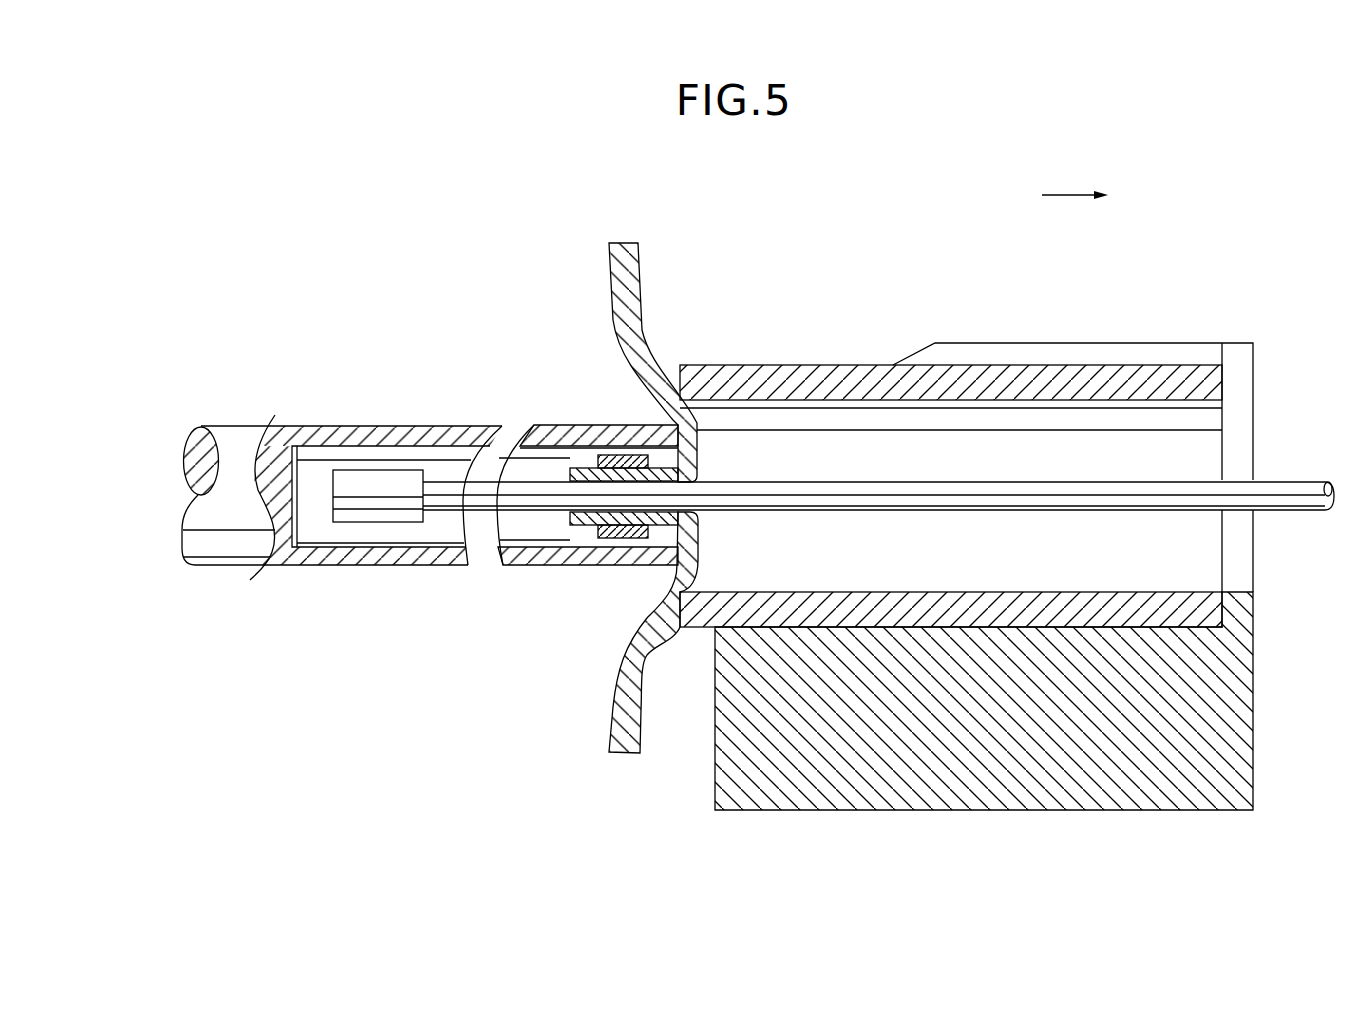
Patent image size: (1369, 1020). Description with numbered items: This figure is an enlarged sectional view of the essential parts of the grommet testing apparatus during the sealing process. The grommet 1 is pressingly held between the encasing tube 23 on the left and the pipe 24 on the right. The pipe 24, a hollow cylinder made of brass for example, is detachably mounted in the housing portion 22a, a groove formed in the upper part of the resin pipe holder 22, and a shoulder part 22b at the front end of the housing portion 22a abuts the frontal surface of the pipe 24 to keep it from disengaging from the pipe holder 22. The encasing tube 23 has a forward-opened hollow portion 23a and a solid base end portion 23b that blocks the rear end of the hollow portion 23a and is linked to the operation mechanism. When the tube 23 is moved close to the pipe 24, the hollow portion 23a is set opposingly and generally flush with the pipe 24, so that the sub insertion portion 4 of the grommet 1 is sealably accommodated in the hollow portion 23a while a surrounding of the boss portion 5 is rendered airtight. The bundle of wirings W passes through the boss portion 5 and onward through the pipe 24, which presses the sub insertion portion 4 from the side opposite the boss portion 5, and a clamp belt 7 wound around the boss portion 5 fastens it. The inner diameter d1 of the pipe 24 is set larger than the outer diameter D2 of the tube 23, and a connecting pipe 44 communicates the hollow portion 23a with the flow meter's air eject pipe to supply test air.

The grommet 1 is at (627, 282).
The sub insertion portion 4 is at (578, 530).
The boss portion 5 is at (590, 453).
The clamp belt 7 is at (617, 540).
The pipe holder 22 is at (977, 752).
The housing portion 22a is at (1050, 357).
The shoulder part 22b is at (1222, 542).
The encasing tube 23 is at (200, 630).
The hollow portion 23a is at (368, 566).
The base end portion 23b is at (223, 566).
The pipe 24 is at (826, 365).
The connecting pipe 44 is at (453, 462).
The wirings W is at (1058, 490).
The outer diameter of the tube D2 is at (312, 551).
The inner diameter of the pipe d1 is at (755, 578).